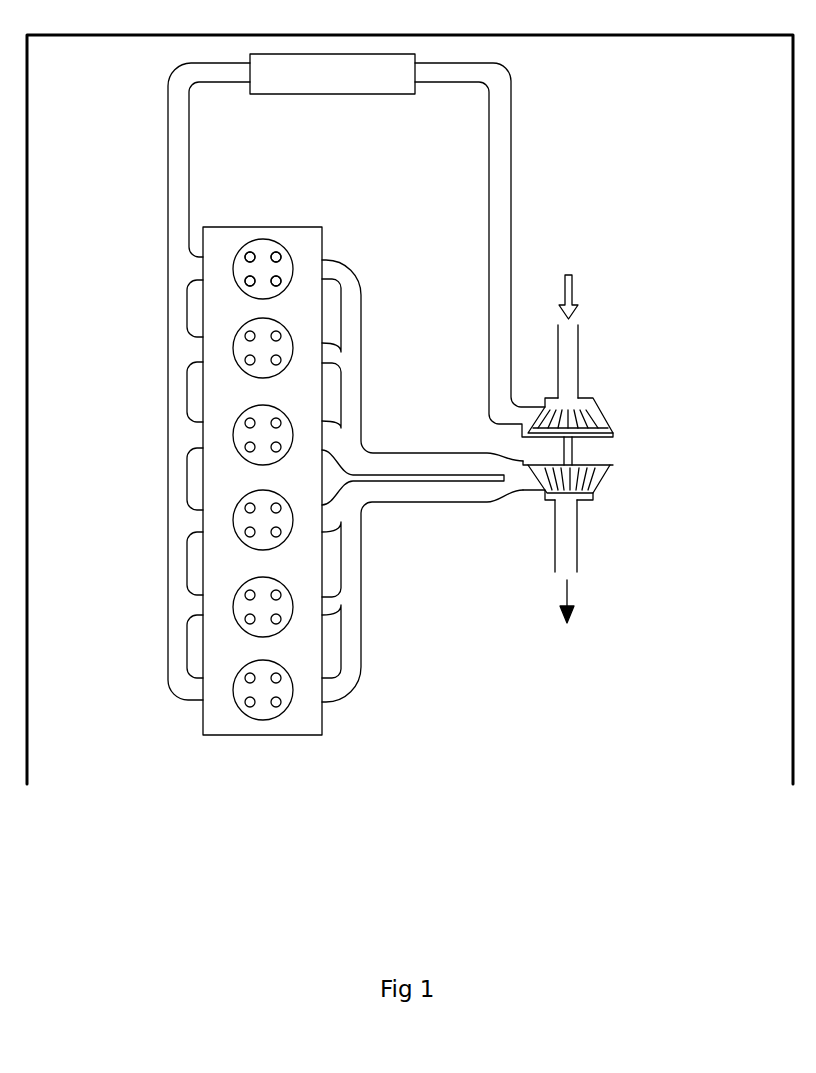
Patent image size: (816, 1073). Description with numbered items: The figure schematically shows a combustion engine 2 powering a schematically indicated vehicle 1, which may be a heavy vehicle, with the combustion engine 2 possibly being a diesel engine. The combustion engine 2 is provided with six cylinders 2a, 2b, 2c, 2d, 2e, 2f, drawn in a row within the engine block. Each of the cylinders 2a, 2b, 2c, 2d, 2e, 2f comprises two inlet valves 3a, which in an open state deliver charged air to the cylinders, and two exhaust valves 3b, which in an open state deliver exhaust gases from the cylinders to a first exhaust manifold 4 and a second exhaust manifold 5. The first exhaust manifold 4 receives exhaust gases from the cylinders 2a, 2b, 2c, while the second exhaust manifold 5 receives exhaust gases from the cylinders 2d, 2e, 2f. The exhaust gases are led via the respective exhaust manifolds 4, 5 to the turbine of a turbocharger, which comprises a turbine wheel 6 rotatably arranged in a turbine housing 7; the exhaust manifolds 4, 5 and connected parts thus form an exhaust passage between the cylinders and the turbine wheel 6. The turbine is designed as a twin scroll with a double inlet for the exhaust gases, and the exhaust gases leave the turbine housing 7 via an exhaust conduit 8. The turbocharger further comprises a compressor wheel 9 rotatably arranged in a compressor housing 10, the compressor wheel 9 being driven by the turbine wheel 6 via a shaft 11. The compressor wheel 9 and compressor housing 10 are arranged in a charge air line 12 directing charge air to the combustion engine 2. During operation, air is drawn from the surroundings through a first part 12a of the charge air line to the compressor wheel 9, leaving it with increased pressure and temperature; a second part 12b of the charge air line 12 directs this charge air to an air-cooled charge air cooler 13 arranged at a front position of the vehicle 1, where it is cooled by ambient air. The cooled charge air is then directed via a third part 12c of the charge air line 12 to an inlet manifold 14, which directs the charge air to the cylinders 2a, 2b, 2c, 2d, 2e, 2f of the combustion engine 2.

The vehicle 1 is at (668, 135).
The combustion engine 2 is at (308, 252).
The cylinder 2a is at (245, 272).
The cylinder 2b is at (245, 348).
The cylinder 2c is at (245, 432).
The cylinder 2d is at (245, 522).
The cylinder 2e is at (245, 607).
The cylinder 2f is at (245, 690).
The inlet valves 3a is at (250, 278).
The exhaust valves 3b is at (278, 278).
The first exhaust manifold 4 is at (353, 410).
The second exhaust manifold 5 is at (350, 537).
The turbine wheel 6 is at (550, 492).
The turbine housing 7 is at (575, 506).
The exhaust conduit 8 is at (570, 537).
The compressor wheel 9 is at (553, 417).
The compressor housing 10 is at (578, 393).
The shaft 11 is at (580, 450).
The charge air line 12 is at (352, 377).
The first part of the charge air line 12a is at (570, 348).
The second part of the charge air line 12b is at (502, 167).
The third part of the charge air line 12c is at (178, 198).
The charge air cooler 13 is at (332, 72).
The inlet manifold 14 is at (177, 389).